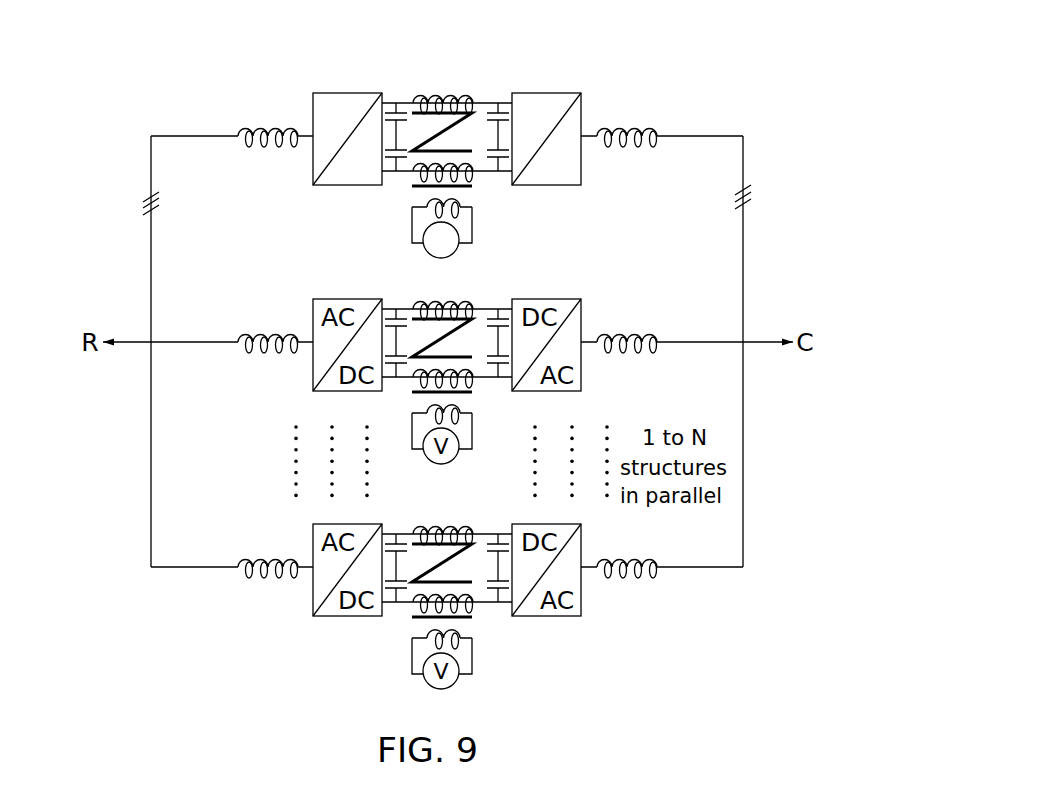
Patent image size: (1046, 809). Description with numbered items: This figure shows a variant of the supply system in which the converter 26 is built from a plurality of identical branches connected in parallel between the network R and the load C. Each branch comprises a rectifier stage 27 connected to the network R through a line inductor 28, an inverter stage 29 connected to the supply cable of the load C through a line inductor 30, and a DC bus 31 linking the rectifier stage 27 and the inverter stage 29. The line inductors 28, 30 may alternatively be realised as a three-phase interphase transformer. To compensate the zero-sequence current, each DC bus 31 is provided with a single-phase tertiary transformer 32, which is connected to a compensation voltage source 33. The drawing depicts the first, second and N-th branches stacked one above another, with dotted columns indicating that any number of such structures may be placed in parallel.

The converter 26 is at (447, 145).
The rectifier stage 27 is at (330, 186).
The line inductor 28 is at (268, 151).
The inverter stage 29 is at (537, 93).
The line inductor 30 is at (627, 148).
The DC bus 31 is at (397, 197).
The single-phase tertiary transformer 32 is at (486, 87).
The compensation voltage source 33 is at (446, 258).